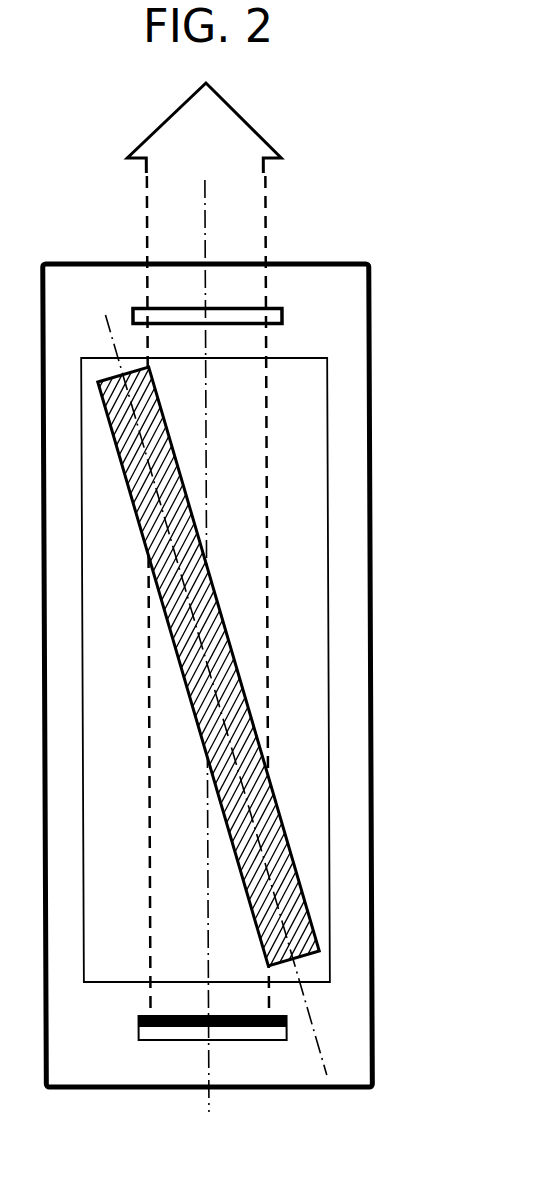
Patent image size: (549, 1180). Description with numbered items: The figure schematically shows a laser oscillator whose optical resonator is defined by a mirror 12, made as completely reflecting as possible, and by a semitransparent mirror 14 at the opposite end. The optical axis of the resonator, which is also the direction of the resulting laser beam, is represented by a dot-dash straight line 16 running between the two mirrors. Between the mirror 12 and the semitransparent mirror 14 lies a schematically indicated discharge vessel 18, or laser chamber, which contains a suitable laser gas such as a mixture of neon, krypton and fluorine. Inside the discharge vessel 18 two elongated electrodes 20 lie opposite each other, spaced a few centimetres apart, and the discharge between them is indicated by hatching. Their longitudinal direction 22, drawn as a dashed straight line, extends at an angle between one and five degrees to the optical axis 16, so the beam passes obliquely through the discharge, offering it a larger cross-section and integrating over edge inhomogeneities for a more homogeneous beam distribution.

The mirror 12 is at (242, 1032).
The semitransparent mirror 14 is at (256, 318).
The optical axis 16 is at (207, 198).
The discharge vessel 18 is at (329, 547).
The electrodes 20 is at (304, 905).
The longitudinal direction of the electrodes 22 is at (308, 997).